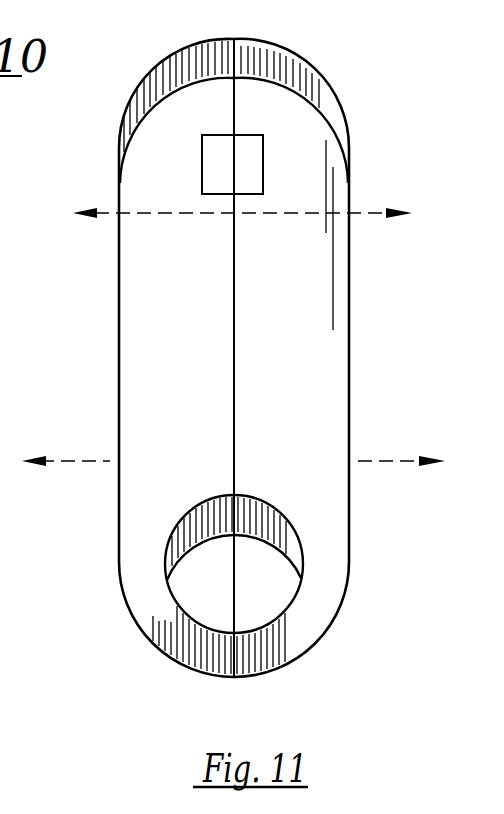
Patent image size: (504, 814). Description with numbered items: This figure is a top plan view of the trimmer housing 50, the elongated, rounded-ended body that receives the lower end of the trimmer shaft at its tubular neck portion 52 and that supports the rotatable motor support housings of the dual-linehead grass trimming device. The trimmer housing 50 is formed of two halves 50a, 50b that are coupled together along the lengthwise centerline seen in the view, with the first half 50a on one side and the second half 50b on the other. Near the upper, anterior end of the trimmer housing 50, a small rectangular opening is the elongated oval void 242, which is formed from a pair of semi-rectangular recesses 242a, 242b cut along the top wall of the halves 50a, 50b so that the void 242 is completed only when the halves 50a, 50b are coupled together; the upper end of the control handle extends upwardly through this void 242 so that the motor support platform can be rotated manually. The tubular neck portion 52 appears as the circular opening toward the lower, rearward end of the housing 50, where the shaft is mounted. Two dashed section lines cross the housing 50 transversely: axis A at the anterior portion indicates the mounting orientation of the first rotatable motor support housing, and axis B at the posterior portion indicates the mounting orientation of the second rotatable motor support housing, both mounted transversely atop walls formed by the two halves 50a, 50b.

The trimmer housing 50 is at (349, 546).
The first half of trimmer housing 50a is at (119, 532).
The second half of trimmer housing 50b is at (345, 600).
The tubular neck portion 52 is at (167, 580).
The elongated oval void 242 is at (247, 159).
The semi-rectangular recess 242a is at (212, 187).
The semi-rectangular recess 242b is at (248, 133).
The axis A is at (336, 213).
The axis B is at (397, 460).